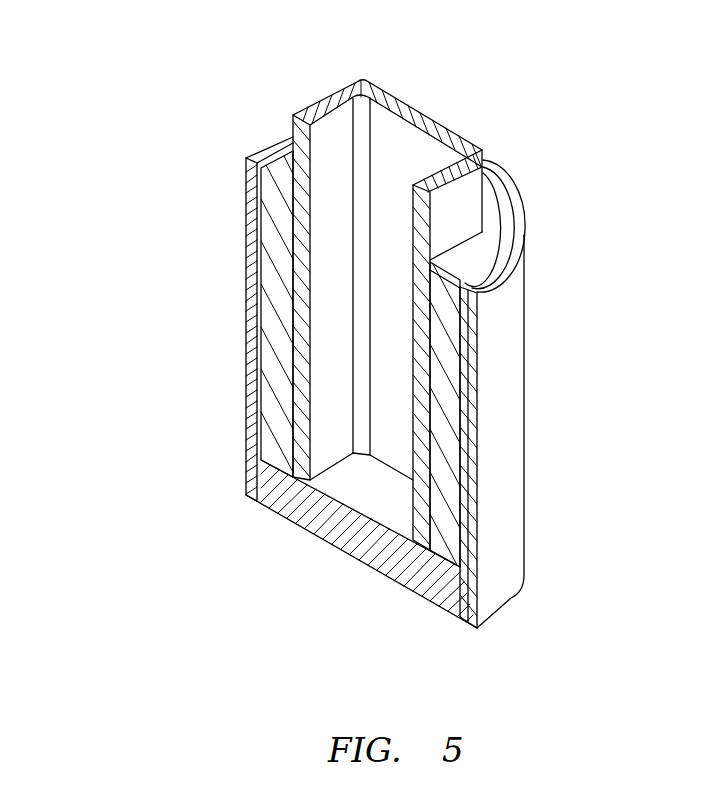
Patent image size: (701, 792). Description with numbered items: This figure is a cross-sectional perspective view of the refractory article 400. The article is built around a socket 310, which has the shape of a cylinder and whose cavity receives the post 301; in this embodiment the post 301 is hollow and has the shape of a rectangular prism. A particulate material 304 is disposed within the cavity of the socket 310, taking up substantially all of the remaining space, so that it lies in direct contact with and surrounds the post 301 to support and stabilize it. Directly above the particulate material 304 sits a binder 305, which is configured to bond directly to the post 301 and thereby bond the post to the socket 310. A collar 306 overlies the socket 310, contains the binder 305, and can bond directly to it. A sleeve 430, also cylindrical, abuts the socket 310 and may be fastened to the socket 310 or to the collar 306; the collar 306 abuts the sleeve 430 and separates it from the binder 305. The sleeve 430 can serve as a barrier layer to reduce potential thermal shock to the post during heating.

The refractory article 400 is at (124, 88).
The post 301 is at (293, 131).
The particulate material 304 is at (265, 308).
The binder 305 is at (270, 200).
The collar 306 is at (503, 197).
The socket 310 is at (250, 472).
The sleeve 430 is at (513, 250).